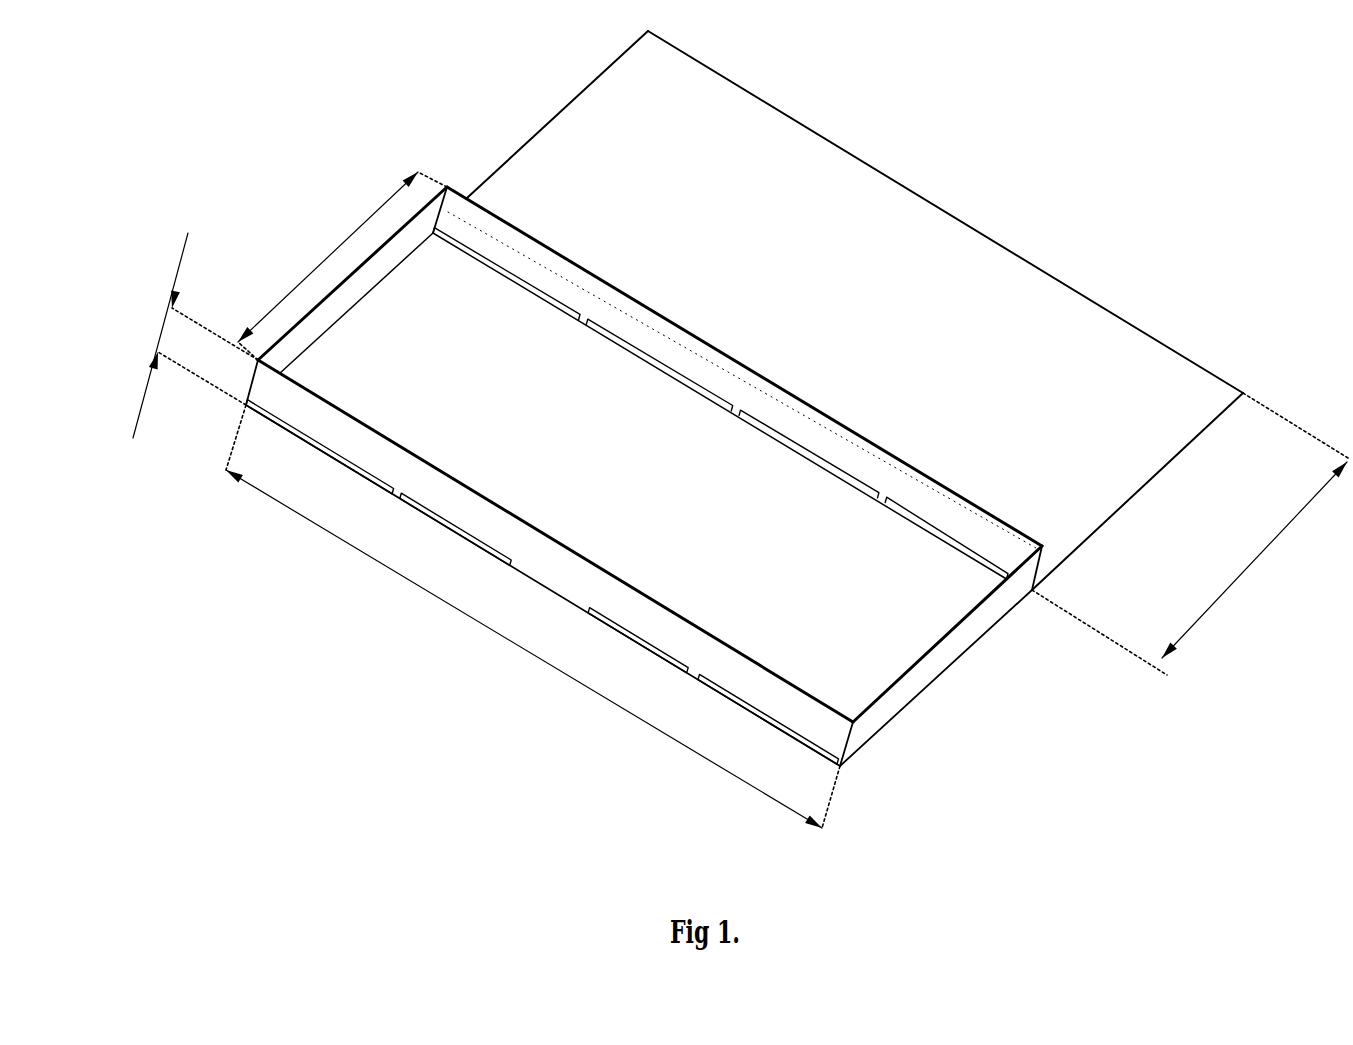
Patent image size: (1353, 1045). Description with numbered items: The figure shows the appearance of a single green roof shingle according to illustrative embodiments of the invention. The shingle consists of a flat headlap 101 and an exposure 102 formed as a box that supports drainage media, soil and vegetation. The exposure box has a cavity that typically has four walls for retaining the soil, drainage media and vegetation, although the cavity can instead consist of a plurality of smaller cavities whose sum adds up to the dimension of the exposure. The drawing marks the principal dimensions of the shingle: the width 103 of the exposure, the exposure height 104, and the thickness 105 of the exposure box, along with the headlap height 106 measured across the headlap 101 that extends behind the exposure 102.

The base plate 101 is at (1008, 390).
The frame / tray body 102 is at (735, 542).
The length of frame 103 is at (533, 616).
The width of frame 104 is at (342, 266).
The height of frame 105 is at (176, 335).
The width of base plate 106 is at (1190, 534).